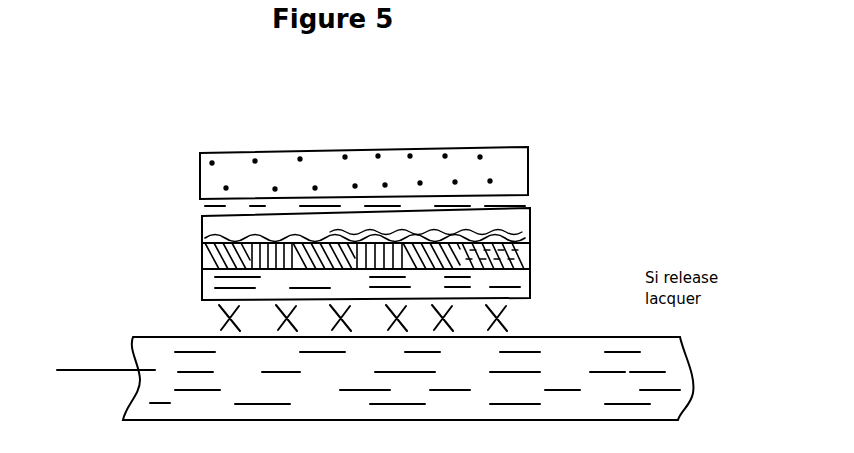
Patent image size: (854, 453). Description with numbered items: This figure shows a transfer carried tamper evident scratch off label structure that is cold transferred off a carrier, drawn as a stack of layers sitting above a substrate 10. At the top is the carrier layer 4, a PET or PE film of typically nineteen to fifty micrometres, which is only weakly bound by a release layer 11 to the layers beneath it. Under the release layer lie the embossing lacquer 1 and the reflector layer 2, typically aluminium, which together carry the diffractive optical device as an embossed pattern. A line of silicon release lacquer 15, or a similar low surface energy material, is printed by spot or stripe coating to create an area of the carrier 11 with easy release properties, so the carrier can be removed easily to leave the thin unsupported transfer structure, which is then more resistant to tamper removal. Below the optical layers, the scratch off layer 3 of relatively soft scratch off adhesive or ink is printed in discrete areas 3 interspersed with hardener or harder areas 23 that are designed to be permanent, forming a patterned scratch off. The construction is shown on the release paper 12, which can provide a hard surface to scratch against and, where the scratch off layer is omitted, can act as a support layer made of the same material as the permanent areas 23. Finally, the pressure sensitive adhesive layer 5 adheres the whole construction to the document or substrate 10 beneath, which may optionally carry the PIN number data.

The embossing lacquer 1 is at (210, 223).
The reflector layer 2 is at (208, 243).
The scratch off layer 3 is at (210, 266).
The carrier layer 4 is at (230, 173).
The pressure sensitive adhesive layer 5 is at (214, 318).
The substrate 10 is at (657, 352).
The release layer 11 is at (228, 208).
The release paper 12 is at (212, 289).
The silicon release lacquer 15 is at (530, 248).
The permanent harder areas 23 is at (210, 258).